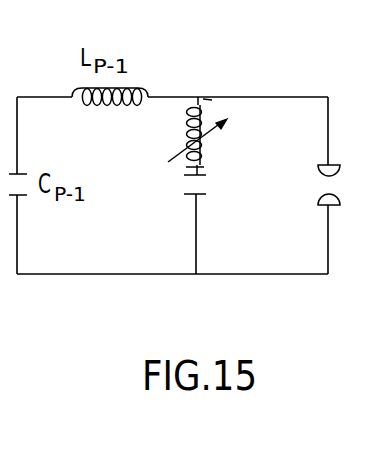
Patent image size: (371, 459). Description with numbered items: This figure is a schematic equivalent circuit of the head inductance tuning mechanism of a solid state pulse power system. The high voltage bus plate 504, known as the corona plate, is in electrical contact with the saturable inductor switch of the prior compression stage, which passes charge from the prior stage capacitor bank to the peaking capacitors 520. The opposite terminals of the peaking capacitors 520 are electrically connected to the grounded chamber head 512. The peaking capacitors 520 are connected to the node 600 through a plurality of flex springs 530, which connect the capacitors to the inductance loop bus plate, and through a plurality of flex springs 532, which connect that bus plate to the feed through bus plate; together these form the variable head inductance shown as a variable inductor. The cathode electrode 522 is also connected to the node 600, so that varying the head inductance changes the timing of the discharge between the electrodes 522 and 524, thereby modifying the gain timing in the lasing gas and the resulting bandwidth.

The node 600 is at (197, 90).
The high voltage bus plate 504 is at (266, 97).
The flex springs 532 is at (203, 99).
The flex springs 530 is at (190, 167).
The cathode electrode 522 is at (318, 165).
The peaking capacitors 520 is at (181, 201).
The electrode 524 is at (318, 206).
The grounded chamber head 512 is at (225, 275).